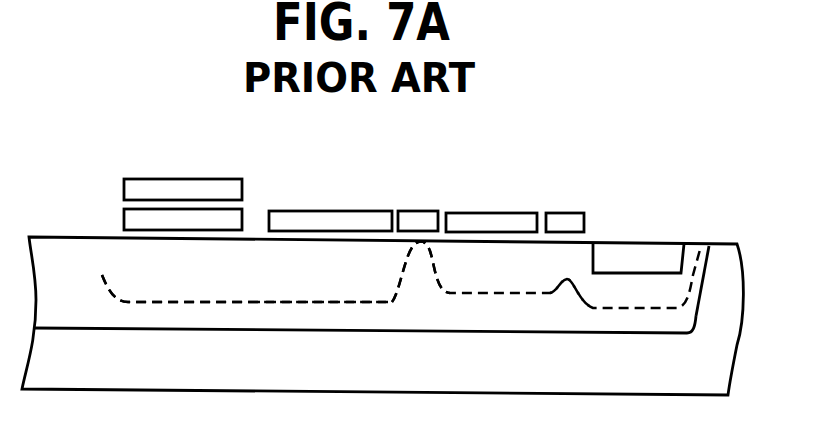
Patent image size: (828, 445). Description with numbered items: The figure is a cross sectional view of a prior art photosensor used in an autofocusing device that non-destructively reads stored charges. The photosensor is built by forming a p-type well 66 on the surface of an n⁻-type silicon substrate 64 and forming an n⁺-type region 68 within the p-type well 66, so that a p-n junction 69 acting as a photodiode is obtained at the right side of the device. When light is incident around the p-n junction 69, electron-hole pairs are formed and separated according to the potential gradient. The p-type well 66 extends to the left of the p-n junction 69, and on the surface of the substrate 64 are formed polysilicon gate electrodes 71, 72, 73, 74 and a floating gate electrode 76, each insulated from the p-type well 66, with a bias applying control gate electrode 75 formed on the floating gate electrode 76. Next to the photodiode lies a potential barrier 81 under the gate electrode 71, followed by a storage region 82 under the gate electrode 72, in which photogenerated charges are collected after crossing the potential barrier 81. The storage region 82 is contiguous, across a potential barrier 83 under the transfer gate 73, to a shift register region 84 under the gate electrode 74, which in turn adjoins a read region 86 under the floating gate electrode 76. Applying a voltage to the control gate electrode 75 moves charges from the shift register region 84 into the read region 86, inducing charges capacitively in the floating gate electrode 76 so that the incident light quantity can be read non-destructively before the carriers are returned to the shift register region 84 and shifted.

The n⁻-type silicon substrate 64 is at (713, 370).
The p-type well 66 is at (697, 313).
The n⁺-type region 68 is at (662, 252).
The p-n junction 69 is at (709, 246).
The gate electrode 71 is at (575, 219).
The gate electrode 72 is at (517, 219).
The transfer gate 73 is at (420, 218).
The gate electrode 74 is at (347, 218).
The control gate electrode 75 is at (223, 179).
The floating gate electrode 76 is at (240, 218).
The potential barrier 81 is at (568, 292).
The storage region 82 is at (502, 310).
The potential barrier 83 is at (411, 265).
The shift register region 84 is at (321, 310).
The read region 86 is at (182, 312).